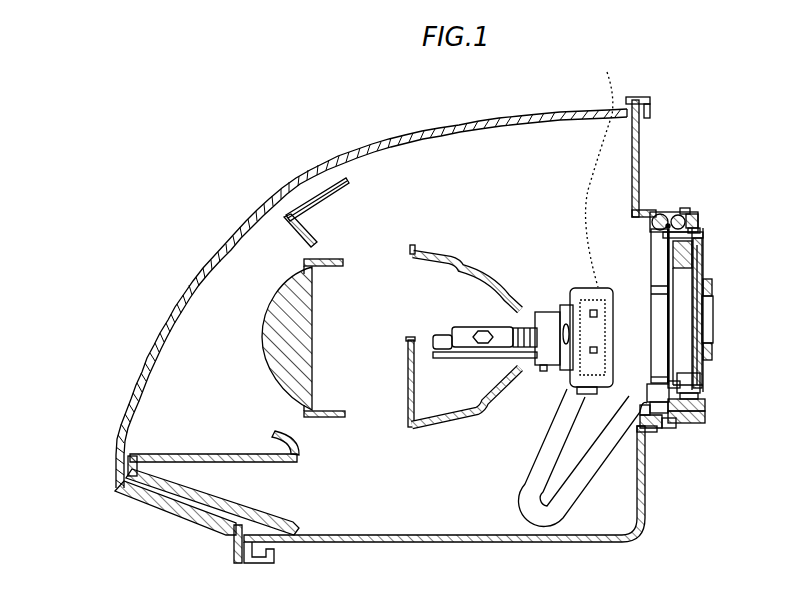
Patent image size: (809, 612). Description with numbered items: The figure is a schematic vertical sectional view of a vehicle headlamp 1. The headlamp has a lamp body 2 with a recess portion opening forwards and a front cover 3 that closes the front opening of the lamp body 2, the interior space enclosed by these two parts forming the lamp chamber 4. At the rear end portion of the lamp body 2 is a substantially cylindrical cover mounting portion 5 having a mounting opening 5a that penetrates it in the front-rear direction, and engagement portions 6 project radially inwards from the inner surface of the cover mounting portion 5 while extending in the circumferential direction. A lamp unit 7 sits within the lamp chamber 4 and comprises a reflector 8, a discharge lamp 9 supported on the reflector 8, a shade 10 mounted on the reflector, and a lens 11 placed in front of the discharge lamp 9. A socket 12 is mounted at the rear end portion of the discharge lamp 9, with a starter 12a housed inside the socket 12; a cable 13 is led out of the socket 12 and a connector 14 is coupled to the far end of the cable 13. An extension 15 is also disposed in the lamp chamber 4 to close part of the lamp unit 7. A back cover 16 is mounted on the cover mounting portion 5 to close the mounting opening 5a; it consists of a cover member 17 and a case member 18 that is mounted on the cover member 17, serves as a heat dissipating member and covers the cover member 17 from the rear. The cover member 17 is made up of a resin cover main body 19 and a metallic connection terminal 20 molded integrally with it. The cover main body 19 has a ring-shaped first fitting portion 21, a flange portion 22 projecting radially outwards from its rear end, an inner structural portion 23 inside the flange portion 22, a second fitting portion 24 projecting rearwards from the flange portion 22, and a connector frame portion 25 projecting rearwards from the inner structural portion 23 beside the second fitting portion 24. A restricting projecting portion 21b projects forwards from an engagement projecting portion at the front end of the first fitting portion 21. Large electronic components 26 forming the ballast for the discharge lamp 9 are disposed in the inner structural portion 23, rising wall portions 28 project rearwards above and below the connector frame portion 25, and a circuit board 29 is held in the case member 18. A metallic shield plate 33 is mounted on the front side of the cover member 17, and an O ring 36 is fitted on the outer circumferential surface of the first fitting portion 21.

The vehicle headlamp 1 is at (123, 195).
The lamp body 2 is at (640, 140).
The front cover 3 is at (168, 314).
The lamp chamber 4 is at (480, 190).
The cover mounting portion 5 is at (676, 218).
The mounting opening 5a is at (694, 226).
The engagement portion 6 is at (667, 218).
The lamp unit 7 is at (430, 254).
The reflector 8 is at (445, 257).
The discharge lamp 9 is at (470, 327).
The shade 10 is at (408, 340).
The lens 11 is at (276, 290).
The socket 12 is at (587, 288).
The starter 12a is at (597, 173).
The cable 13 is at (580, 495).
The connector 14 is at (651, 432).
The extension 15 is at (300, 206).
The back cover 16 is at (703, 250).
The cover member 17 is at (690, 412).
The case member 18 is at (698, 403).
The cover main body 19 is at (687, 420).
The connection terminal 20 is at (692, 383).
The first fitting portion 21 is at (652, 226).
The restricting projecting portion 21b is at (645, 430).
The flange portion 22 is at (684, 220).
The inner structural portion 23 is at (692, 395).
The second fitting portion 24 is at (700, 229).
The connector frame portion 25 is at (713, 310).
The large electronic component 26 is at (695, 258).
The rising wall portion 28 is at (712, 285).
The circuit board 29 is at (703, 322).
The shield plate 33 is at (650, 230).
The O ring 36 is at (665, 213).